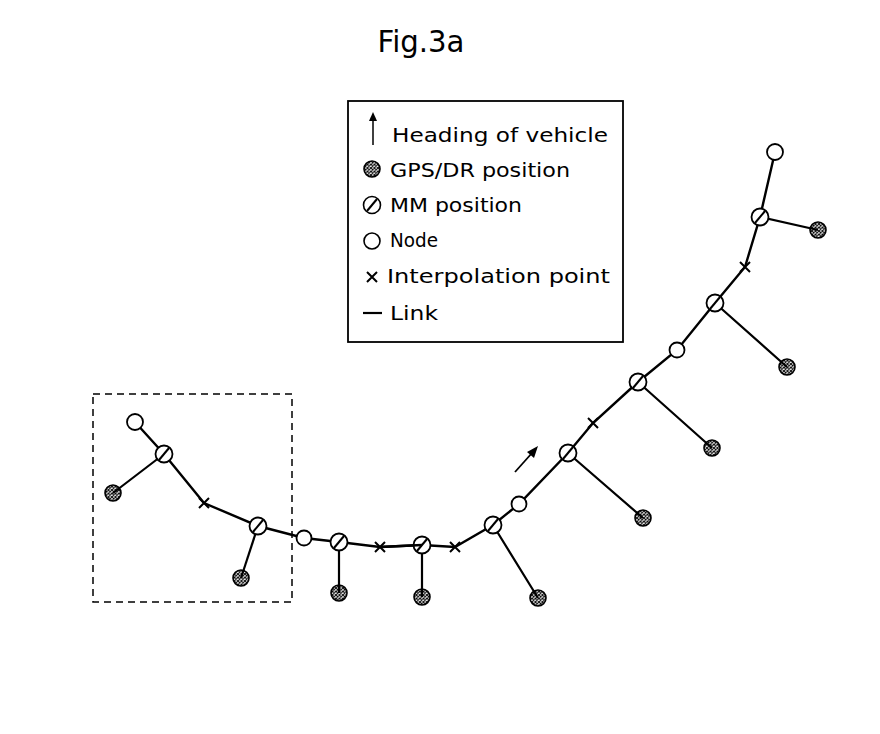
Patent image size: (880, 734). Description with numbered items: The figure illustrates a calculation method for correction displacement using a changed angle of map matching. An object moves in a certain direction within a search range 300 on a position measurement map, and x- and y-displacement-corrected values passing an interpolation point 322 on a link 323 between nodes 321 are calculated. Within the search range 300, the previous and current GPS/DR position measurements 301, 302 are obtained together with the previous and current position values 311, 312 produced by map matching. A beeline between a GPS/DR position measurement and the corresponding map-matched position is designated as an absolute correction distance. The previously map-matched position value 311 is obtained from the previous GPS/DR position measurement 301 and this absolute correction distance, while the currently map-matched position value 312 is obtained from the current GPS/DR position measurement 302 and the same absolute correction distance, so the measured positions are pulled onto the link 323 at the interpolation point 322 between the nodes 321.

The search range 300 is at (125, 603).
The previous GPS/DR position measurement 301 is at (107, 501).
The current GPS/DR position measurement 302 is at (240, 588).
The previous map-matched position value 311 is at (164, 445).
The current map-matched position value 312 is at (258, 517).
The node 321 is at (305, 546).
The interpolation point 322 is at (380, 540).
The link 323 is at (397, 545).